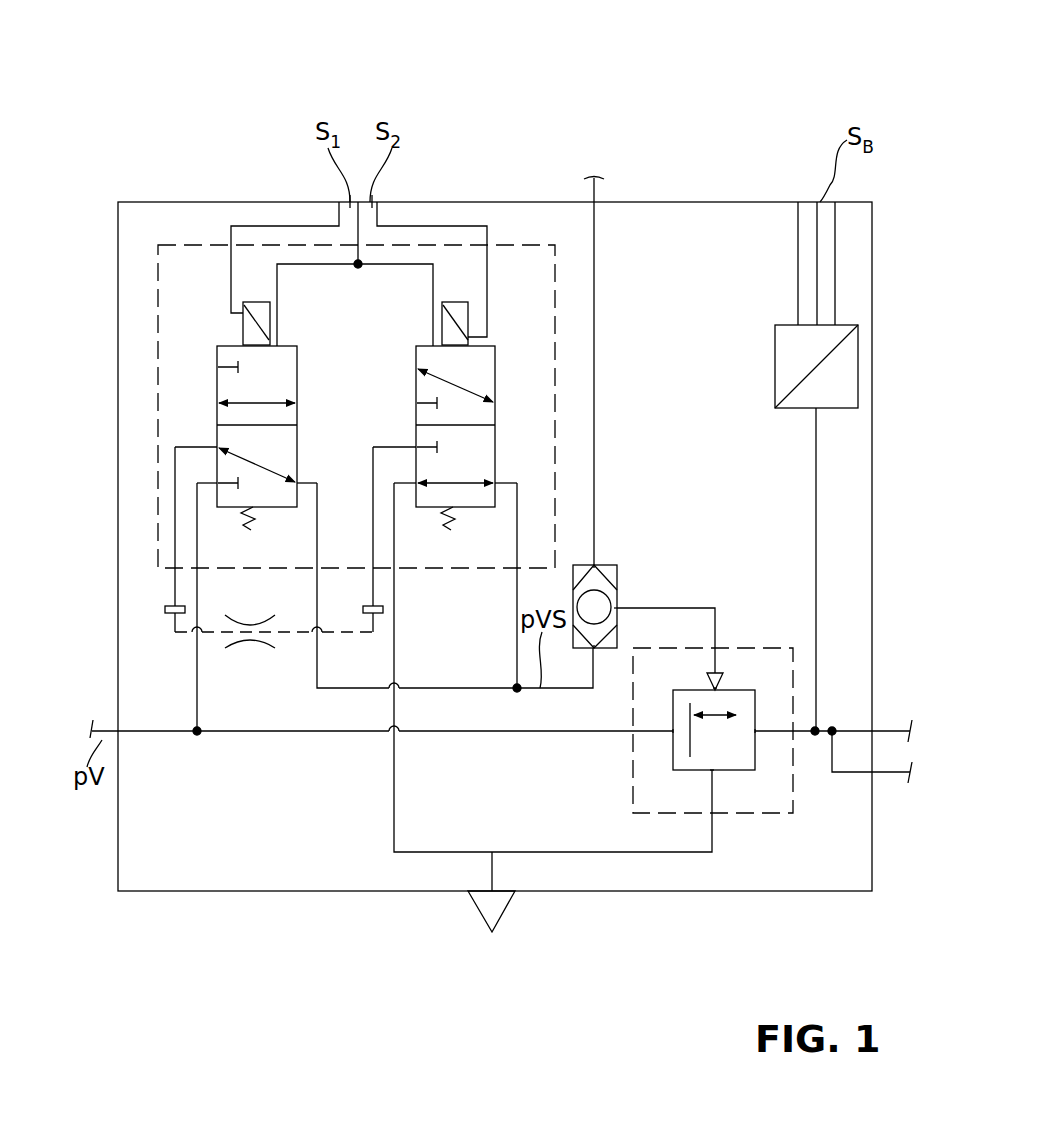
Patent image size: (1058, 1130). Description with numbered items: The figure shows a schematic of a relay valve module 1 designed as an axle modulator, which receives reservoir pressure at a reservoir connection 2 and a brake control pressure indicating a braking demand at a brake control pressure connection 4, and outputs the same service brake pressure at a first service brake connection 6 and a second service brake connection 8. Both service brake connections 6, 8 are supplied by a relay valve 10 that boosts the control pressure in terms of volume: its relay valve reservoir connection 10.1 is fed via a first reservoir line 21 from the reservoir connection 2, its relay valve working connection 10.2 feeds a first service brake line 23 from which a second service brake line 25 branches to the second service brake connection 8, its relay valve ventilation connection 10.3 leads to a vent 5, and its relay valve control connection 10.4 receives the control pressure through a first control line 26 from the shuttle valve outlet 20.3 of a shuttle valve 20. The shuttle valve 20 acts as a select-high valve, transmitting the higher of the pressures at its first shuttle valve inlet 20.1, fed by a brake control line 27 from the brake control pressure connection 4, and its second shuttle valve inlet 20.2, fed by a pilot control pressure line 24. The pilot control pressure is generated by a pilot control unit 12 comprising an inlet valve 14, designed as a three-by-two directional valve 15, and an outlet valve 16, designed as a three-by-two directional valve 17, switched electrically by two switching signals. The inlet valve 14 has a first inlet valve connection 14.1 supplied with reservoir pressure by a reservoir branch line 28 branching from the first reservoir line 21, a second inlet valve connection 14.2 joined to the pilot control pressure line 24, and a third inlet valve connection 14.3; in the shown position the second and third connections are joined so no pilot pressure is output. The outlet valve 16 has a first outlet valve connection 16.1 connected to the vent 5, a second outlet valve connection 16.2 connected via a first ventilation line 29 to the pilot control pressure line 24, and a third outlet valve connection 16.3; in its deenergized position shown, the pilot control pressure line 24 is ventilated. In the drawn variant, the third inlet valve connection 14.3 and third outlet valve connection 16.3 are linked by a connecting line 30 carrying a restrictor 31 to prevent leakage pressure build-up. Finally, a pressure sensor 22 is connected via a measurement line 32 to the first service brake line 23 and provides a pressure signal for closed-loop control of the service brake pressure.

The relay valve module 1 is at (180, 130).
The pilot control unit 12 is at (148, 269).
The inlet valve 14 is at (284, 405).
The 3/2 directional valve 15 is at (256, 323).
The outlet valve 16 is at (418, 416).
The 3/2 directional valve 17 is at (423, 345).
The first inlet valve connection 14.1 is at (218, 483).
The second inlet valve connection 14.2 is at (297, 483).
The third inlet valve connection 14.3 is at (218, 447).
The first outlet valve connection 16.1 is at (417, 483).
The second outlet valve connection 16.2 is at (495, 483).
The third outlet valve connection 16.3 is at (416, 447).
The brake control pressure connection 4 is at (642, 175).
The brake control line 27 is at (594, 330).
The pressure sensor 22 is at (858, 362).
The measurement line 32 is at (817, 512).
The shuttle valve 20 is at (615, 587).
The first shuttle valve inlet 20.1 is at (594, 565).
The second shuttle valve inlet 20.2 is at (592, 652).
The shuttle valve outlet 20.3 is at (620, 615).
The first control line 26 is at (648, 607).
The relay valve 10 is at (733, 688).
The relay valve reservoir connection 10.1 is at (673, 731).
The relay valve working connection 10.2 is at (757, 730).
The relay valve ventilation connection 10.3 is at (713, 772).
The relay valve control connection 10.4 is at (713, 690).
The connecting line 30 is at (173, 622).
The restrictor 31 is at (255, 642).
The reservoir branch line 28 is at (197, 685).
The reservoir connection 2 is at (118, 730).
The first reservoir line 21 is at (302, 733).
The pilot control pressure line 24 is at (415, 688).
The first ventilation line 29 is at (517, 637).
The first service brake connection 6 is at (873, 731).
The second service brake connection 8 is at (873, 773).
The second service brake line 25 is at (840, 773).
The first service brake line 23 is at (812, 735).
The vent 5 is at (492, 932).